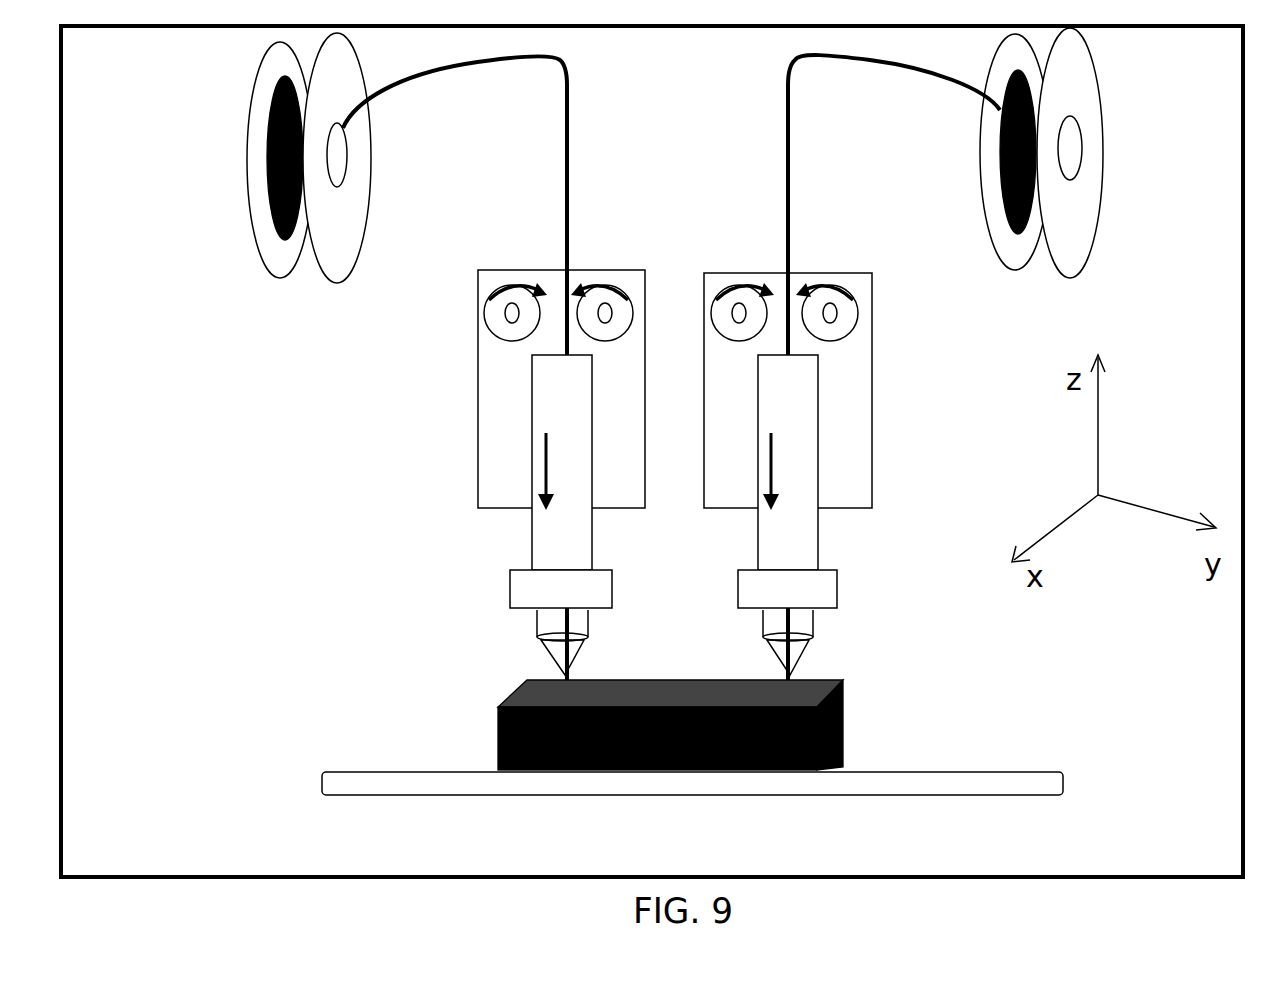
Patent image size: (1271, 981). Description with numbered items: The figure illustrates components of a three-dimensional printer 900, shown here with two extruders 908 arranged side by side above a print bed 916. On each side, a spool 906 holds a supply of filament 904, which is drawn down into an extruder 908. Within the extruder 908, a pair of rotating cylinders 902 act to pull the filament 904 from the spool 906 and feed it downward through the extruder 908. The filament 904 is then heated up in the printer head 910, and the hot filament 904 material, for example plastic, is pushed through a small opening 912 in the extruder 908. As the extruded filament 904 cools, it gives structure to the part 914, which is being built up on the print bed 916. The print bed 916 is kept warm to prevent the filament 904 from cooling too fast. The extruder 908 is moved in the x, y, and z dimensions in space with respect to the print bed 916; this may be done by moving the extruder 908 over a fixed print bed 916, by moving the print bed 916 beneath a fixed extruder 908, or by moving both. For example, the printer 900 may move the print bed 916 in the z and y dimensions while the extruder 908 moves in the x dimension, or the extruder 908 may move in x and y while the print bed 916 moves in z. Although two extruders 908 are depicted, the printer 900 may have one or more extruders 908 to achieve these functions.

The 3D printer 900 is at (178, 459).
The rotating cylinders 902 is at (500, 318).
The filament 904 is at (566, 154).
The spool 906 is at (257, 230).
The extruder 908 is at (555, 543).
The printer head 910 is at (530, 588).
The small opening 912 is at (560, 667).
The part 914 is at (498, 707).
The print bed 916 is at (1038, 778).